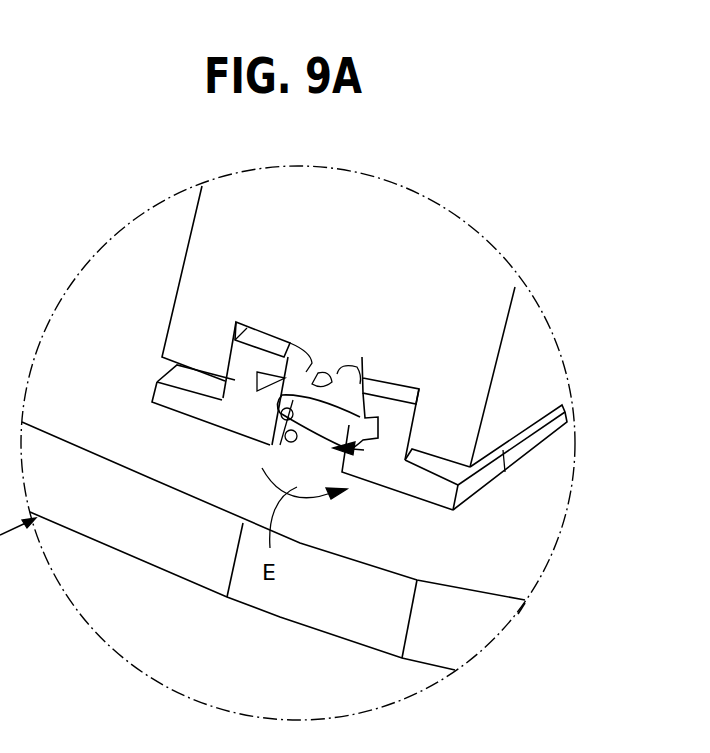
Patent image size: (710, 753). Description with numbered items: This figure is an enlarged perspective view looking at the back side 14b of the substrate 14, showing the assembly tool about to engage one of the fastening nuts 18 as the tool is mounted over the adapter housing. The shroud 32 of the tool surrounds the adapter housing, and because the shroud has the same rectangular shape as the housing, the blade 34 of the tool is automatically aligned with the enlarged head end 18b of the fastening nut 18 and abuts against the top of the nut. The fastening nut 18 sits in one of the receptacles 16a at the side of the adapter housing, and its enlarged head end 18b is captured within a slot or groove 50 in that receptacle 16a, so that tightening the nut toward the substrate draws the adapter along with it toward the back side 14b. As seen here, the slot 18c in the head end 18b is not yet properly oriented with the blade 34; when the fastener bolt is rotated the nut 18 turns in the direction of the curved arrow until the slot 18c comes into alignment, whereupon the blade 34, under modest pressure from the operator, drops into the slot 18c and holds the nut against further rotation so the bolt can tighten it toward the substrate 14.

The substrate 14 is at (467, 624).
The back side of substrate 14b is at (503, 555).
The receptacles 16a is at (296, 446).
The fastening nut 18 is at (368, 455).
The enlarged head end 18b is at (343, 417).
The slot 18c is at (292, 381).
The shroud 32 is at (462, 360).
The blade 34 is at (327, 378).
The slot or groove 50 is at (403, 443).